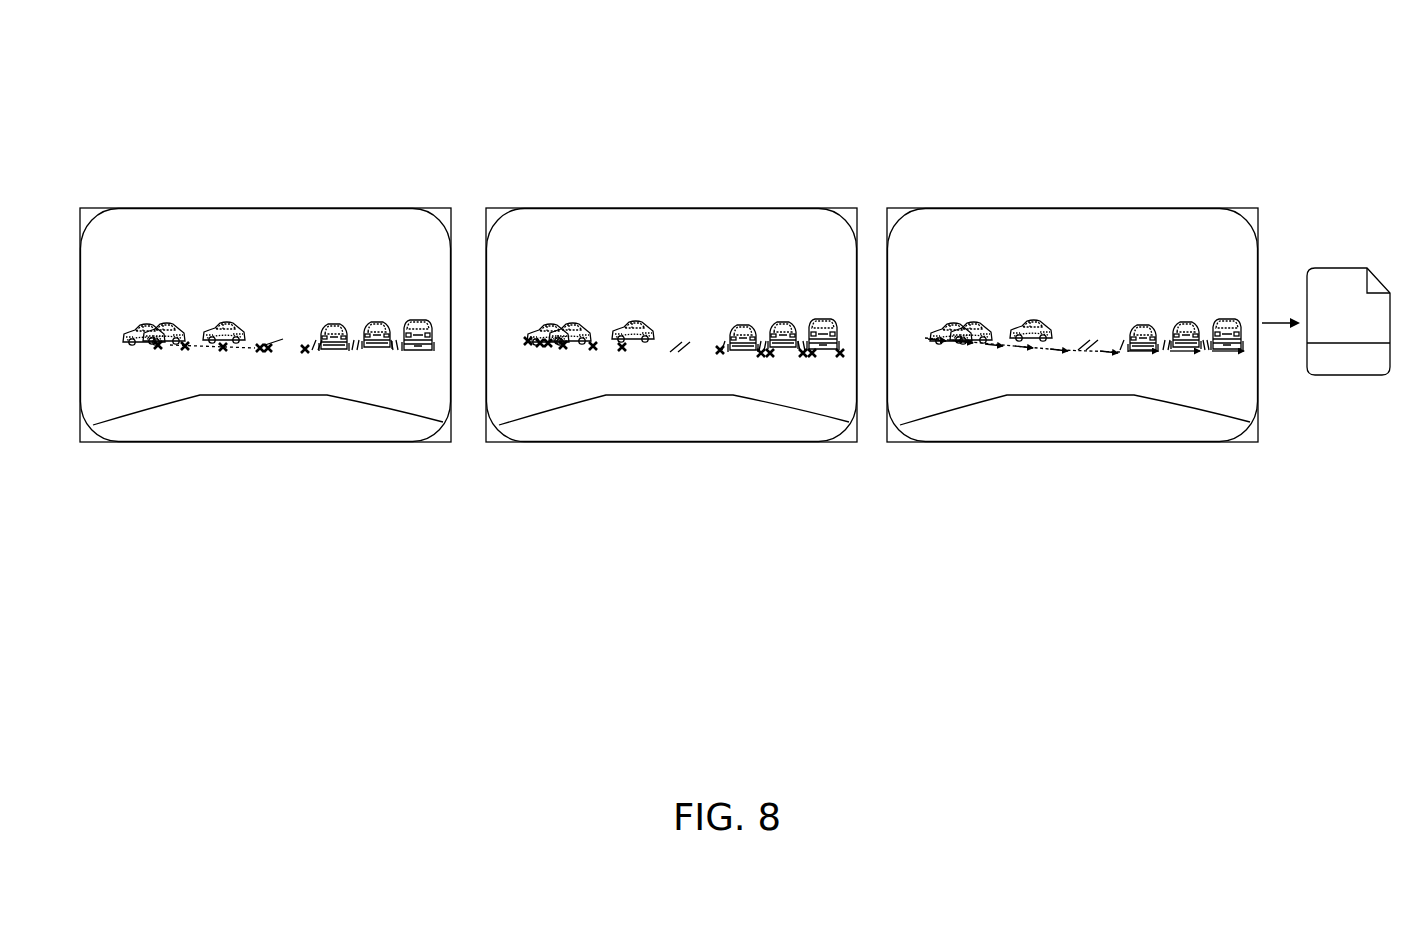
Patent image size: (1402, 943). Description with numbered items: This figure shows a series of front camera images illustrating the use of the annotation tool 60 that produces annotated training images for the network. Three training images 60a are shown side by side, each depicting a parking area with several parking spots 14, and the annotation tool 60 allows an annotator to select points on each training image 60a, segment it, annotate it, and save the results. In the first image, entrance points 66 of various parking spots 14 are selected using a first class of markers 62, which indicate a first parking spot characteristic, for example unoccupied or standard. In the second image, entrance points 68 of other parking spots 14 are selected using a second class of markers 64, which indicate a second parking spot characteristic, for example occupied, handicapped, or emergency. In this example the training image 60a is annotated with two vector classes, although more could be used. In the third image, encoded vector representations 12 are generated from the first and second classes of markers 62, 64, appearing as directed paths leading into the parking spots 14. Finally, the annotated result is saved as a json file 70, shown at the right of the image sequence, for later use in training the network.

The annotation tool 60 is at (922, 70).
The training image 60a is at (278, 192).
The first class of markers 62 is at (216, 380).
The entrance points 66 is at (263, 355).
The second class of markers 64 is at (684, 379).
The entrance points 68 is at (710, 367).
The parking spots 14 is at (377, 358).
The encoded vector representations 12 is at (1070, 362).
The json file 70 is at (1340, 375).